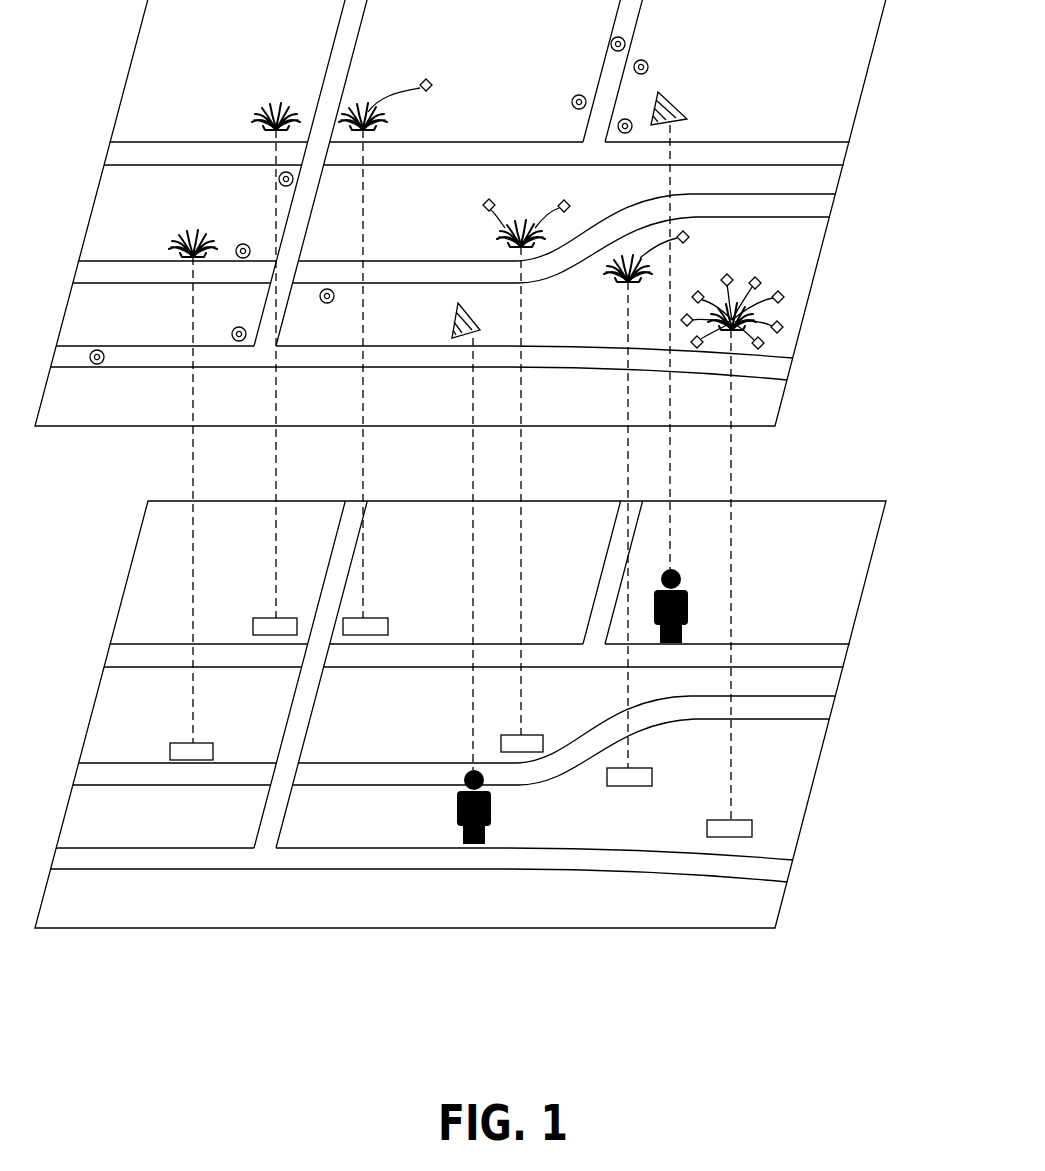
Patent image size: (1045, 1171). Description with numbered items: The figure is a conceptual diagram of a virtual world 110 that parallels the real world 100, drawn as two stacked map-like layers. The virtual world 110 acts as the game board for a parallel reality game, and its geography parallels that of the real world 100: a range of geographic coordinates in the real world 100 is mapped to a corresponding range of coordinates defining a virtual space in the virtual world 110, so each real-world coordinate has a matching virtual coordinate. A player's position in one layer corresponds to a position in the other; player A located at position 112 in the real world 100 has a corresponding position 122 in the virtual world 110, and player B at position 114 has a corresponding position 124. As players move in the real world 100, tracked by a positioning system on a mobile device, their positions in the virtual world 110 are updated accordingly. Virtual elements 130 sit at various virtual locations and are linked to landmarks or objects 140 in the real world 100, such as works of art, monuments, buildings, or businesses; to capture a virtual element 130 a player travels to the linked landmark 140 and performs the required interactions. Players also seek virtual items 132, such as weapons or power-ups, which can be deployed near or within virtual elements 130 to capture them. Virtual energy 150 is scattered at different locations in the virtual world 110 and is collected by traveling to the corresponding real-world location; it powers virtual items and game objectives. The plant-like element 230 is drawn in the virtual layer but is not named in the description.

The real world 100 is at (863, 587).
The virtual world 110 is at (850, 119).
The position of player A in the real world 112 is at (457, 813).
The position of player B in the real world 114 is at (688, 597).
The position of player A in the virtual world 122 is at (481, 325).
The position of player B in the virtual world 124 is at (688, 118).
The virtual element 130 is at (281, 113).
The virtual item 132 is at (431, 84).
The landmark or object in the real world 140 is at (270, 618).
The virtual energy 150 is at (96, 349).
The growing virtual plant object 230 is at (528, 222).